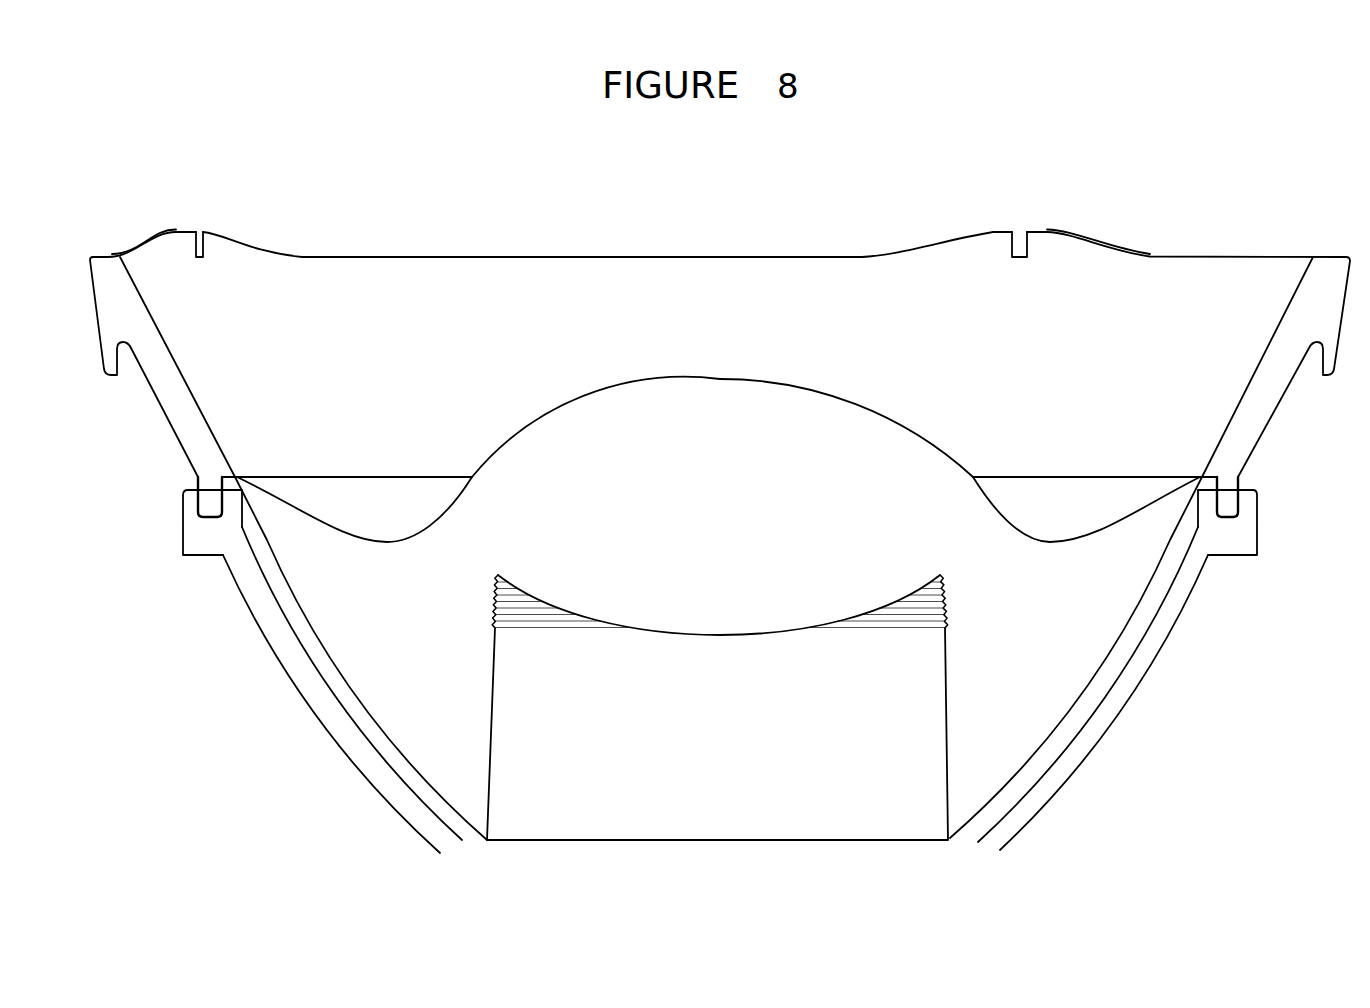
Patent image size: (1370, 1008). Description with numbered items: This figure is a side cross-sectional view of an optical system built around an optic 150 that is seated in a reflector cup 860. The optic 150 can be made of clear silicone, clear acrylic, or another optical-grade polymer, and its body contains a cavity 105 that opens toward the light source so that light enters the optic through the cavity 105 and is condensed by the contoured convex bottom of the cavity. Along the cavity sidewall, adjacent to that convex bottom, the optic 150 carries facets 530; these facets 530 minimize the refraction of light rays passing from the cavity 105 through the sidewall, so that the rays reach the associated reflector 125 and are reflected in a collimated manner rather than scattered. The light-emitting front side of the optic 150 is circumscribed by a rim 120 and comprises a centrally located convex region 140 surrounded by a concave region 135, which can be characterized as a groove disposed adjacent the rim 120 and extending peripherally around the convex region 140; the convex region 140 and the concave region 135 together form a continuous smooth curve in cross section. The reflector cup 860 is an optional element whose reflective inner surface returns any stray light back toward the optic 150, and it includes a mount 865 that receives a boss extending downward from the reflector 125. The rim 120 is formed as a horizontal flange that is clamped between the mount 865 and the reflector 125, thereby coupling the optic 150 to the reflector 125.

The cavity 105 is at (744, 781).
The rim 120 is at (220, 487).
The reflector 125 is at (1292, 305).
The concave region 135 is at (377, 507).
The convex region 140 is at (753, 380).
The optic 150 is at (1055, 675).
The facets 530 is at (481, 601).
The reflector cup 860 is at (1173, 610).
The mount 865 is at (1243, 537).